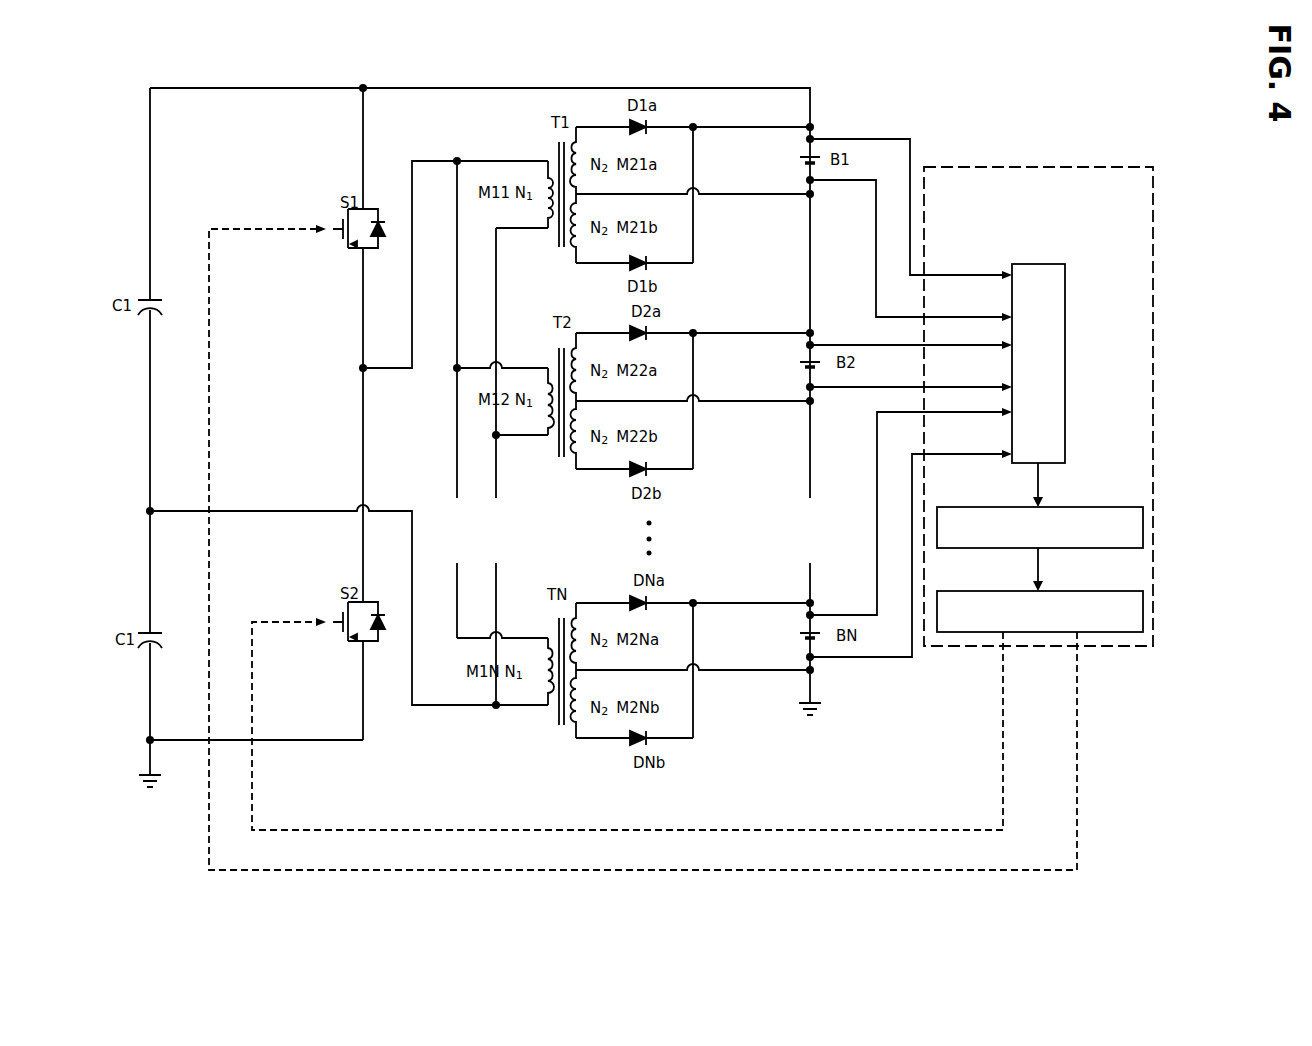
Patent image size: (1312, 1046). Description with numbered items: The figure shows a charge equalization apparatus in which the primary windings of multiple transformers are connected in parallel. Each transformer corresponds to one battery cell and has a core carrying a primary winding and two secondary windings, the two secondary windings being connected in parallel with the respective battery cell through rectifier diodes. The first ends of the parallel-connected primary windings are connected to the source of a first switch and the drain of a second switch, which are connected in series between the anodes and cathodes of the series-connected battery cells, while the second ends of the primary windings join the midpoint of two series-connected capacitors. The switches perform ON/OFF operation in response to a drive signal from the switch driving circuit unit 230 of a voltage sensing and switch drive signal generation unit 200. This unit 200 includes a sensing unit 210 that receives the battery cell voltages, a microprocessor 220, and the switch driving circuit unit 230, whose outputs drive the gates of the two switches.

The voltage sensing and switch drive signal generation unit 200 is at (1040, 167).
The sensing unit 210 is at (1065, 368).
The microprocessor 220 is at (1143, 526).
The switch driving circuit unit 230 is at (1143, 609).